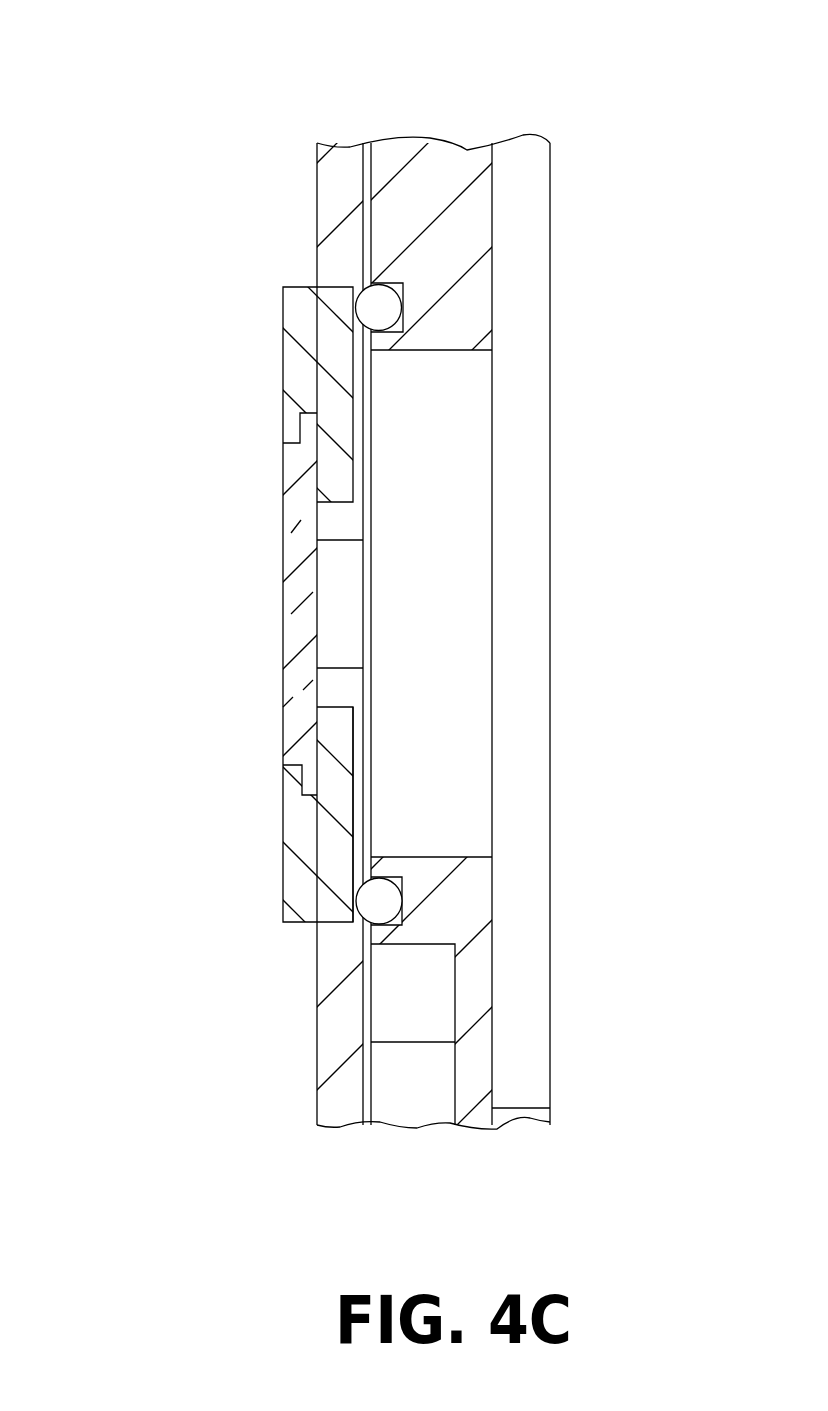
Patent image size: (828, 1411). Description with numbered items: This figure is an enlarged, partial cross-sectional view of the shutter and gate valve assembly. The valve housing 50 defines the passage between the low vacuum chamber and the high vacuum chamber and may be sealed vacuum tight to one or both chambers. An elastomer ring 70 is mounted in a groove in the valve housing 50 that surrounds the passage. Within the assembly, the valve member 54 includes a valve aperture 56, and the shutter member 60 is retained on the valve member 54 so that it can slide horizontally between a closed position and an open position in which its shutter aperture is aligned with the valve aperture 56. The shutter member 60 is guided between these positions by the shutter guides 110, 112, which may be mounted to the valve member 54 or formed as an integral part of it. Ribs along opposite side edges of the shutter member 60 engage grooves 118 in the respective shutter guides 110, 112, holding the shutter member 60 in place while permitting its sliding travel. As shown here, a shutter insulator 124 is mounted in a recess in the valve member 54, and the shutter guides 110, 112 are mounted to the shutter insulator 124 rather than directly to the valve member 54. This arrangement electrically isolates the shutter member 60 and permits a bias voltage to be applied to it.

The valve housing 50 is at (418, 148).
The valve member 54 is at (317, 1052).
The valve aperture 56 is at (345, 607).
The shutter member 60 is at (283, 675).
The elastomer ring 70 is at (379, 900).
The shutter guide 110 is at (283, 352).
The shutter guide 112 is at (283, 866).
The groove 118 is at (301, 428).
The shutter insulator 124 is at (330, 836).